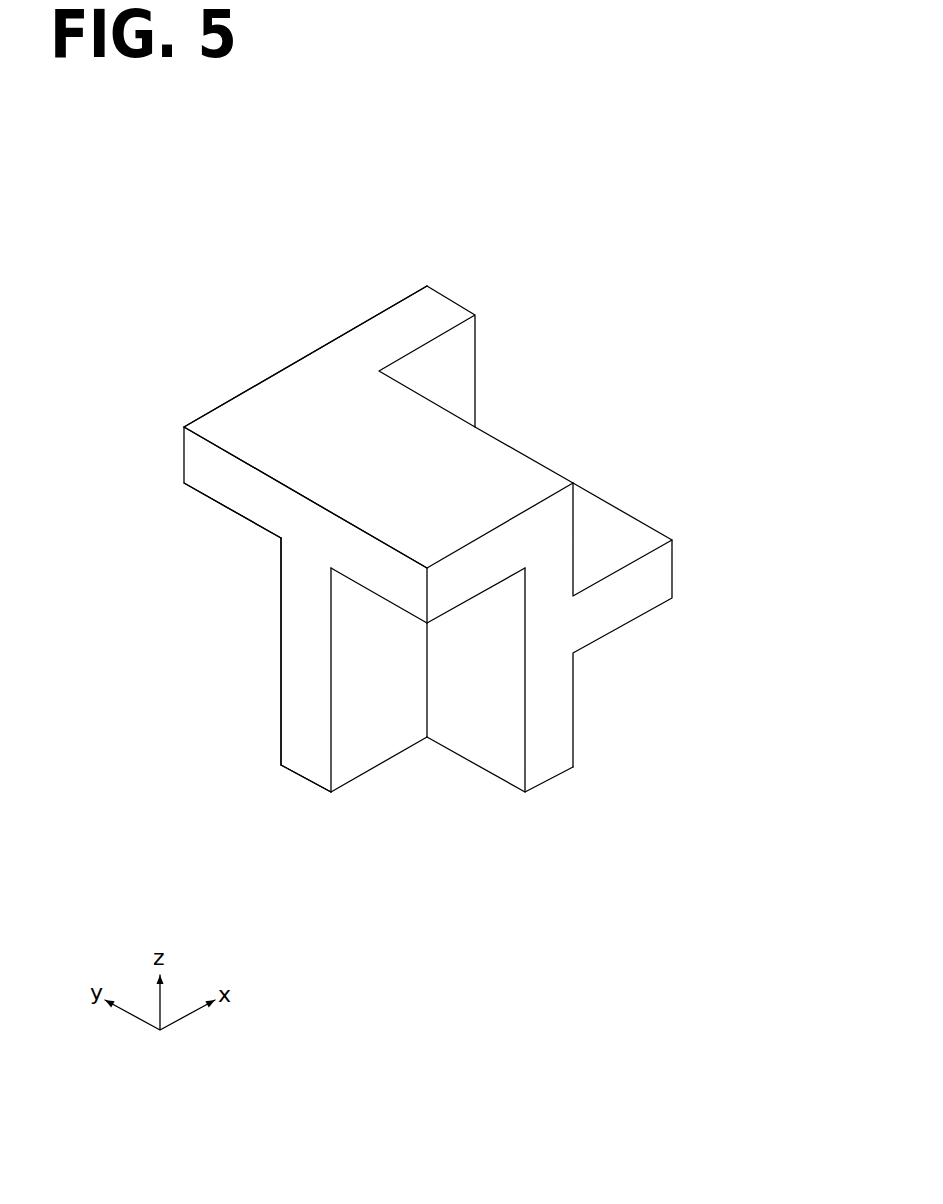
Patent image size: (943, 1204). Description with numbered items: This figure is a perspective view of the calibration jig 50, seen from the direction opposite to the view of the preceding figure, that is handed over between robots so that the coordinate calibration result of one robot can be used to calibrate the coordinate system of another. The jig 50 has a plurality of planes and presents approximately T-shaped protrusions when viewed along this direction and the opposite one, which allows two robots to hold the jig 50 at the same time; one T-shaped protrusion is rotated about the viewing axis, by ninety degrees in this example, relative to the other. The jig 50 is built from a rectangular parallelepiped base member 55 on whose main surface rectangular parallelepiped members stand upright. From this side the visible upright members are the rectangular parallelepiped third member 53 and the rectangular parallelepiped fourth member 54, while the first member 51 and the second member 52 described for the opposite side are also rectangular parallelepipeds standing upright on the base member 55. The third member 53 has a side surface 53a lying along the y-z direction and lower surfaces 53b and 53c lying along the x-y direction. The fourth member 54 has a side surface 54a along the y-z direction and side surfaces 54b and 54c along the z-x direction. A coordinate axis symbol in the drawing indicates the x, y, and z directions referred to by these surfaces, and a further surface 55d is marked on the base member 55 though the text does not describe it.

The jig 50 is at (702, 358).
The first member 51 is at (485, 351).
The second member 52 is at (647, 580).
The third member 53 is at (200, 462).
The side surface 53a is at (244, 491).
The lower surface 53b is at (217, 506).
The lower surface 53c is at (455, 613).
The fourth member 54 is at (302, 738).
The side surface 54a is at (302, 676).
The side surface 54b is at (382, 750).
The side surface 54c is at (302, 606).
The base member 55 is at (548, 758).
The bottom surface of second vertical plate 55d is at (467, 745).